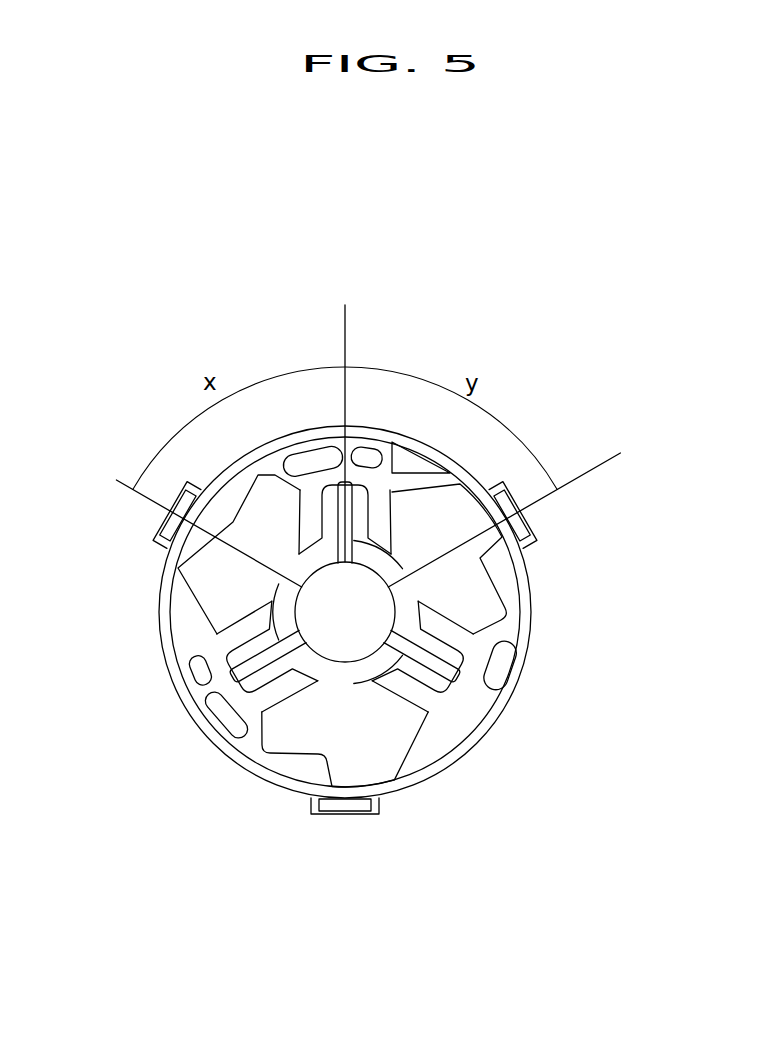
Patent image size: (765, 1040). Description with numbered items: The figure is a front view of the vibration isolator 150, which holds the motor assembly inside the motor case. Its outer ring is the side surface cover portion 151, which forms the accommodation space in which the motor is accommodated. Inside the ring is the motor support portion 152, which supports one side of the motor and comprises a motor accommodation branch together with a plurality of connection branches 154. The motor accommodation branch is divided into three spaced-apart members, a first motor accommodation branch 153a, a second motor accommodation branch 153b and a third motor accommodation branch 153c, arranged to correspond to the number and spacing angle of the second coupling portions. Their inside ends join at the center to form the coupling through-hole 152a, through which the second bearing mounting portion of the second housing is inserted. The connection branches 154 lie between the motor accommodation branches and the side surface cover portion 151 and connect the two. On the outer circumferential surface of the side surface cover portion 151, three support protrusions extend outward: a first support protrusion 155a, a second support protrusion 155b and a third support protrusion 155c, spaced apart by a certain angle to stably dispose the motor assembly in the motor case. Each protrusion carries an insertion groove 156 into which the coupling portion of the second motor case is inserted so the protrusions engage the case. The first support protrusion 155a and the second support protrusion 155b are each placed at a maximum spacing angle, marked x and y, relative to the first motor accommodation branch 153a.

The vibration isolator 150 is at (385, 287).
The side surface cover portion 151 is at (310, 797).
The motor support portion 152 is at (308, 700).
The coupling through-hole 152a is at (350, 626).
The first motor accommodation branch 153a is at (342, 523).
The second motor accommodation branch 153b is at (453, 673).
The third motor accommodation branch 153c is at (278, 648).
The connection branches 154 is at (343, 447).
The first support protrusion 155a is at (160, 528).
The second support protrusion 155b is at (535, 538).
The third support protrusion 155c is at (377, 805).
The insertion groove 156 is at (187, 500).